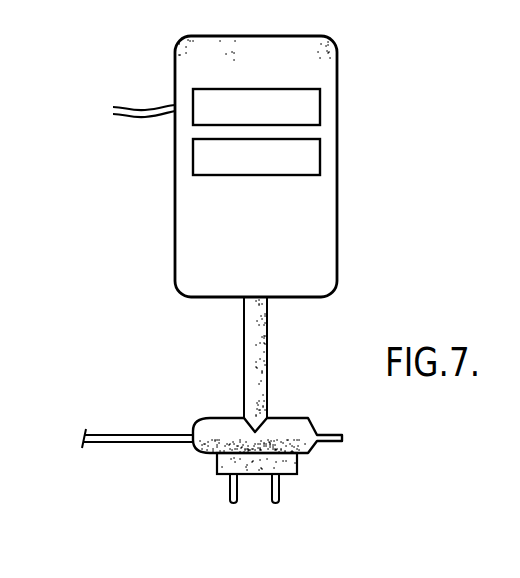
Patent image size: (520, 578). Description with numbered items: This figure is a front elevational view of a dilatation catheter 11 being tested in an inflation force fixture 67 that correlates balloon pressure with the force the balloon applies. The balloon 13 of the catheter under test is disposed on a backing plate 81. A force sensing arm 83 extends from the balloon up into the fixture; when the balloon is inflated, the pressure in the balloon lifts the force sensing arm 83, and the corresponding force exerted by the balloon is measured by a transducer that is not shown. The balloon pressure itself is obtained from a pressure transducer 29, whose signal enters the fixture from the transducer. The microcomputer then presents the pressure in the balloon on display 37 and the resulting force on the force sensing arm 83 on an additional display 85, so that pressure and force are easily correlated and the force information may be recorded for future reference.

The dilatation catheter 11 is at (132, 436).
The balloon 13 is at (296, 417).
The pressure transducer 29 is at (155, 116).
The display 37 is at (320, 103).
The inflation force fixture 67 is at (337, 222).
The backing plate 81 is at (297, 465).
The force sensing arm 83 is at (267, 340).
The additional display 85 is at (320, 152).